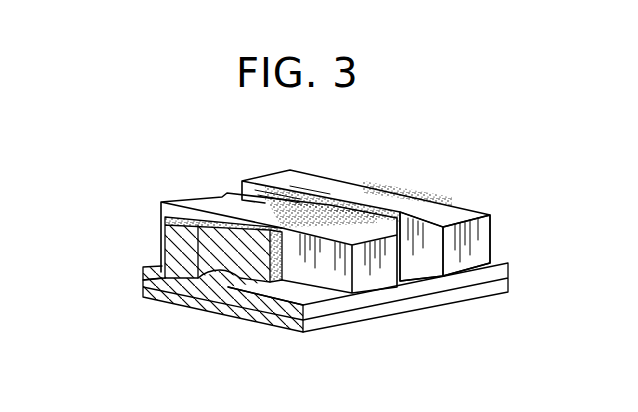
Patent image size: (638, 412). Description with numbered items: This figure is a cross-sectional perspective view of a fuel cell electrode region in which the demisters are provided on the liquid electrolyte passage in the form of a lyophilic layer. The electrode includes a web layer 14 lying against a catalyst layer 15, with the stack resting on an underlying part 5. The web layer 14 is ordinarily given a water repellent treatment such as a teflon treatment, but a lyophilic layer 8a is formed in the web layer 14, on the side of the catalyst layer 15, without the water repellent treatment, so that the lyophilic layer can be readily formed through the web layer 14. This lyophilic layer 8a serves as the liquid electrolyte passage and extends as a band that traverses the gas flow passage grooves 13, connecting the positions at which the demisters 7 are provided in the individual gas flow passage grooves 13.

The substrate 5 is at (143, 290).
The catalyst layer 15 is at (143, 278).
The web layer 14 is at (262, 307).
The lyophilic layer 8a is at (197, 288).
The demisters 7 is at (172, 220).
The gas flow passage grooves 13 is at (424, 262).